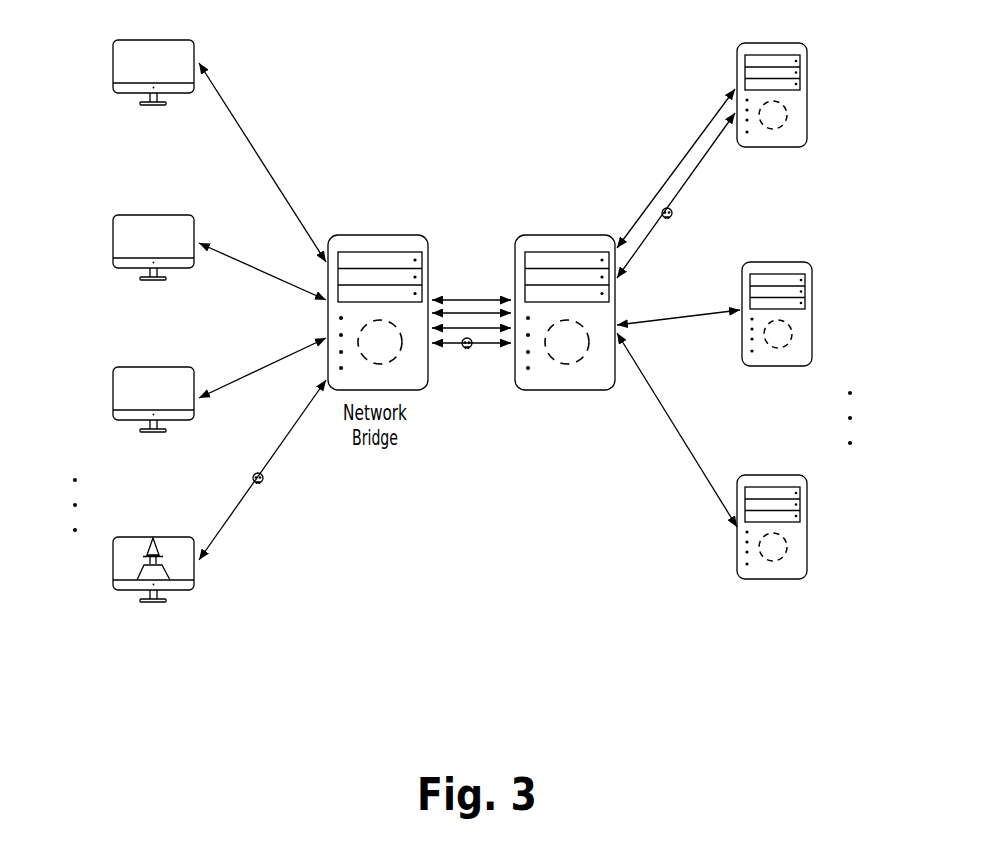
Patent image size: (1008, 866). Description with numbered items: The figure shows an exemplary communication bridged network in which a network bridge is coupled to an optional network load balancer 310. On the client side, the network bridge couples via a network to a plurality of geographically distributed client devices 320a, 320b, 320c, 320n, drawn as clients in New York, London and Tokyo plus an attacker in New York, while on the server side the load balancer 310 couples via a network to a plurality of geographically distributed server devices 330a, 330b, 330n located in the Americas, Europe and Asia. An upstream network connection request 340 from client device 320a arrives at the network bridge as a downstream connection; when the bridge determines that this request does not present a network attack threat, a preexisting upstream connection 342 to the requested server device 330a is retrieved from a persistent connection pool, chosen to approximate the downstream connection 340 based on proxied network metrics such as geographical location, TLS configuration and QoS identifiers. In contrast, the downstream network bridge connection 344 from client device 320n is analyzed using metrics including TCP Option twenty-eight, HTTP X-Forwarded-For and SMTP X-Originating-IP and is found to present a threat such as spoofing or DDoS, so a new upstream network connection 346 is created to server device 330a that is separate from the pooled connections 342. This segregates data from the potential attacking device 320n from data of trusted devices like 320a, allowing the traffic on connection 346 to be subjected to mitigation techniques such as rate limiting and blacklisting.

The network load balancer 310 is at (533, 236).
The client device 320a is at (113, 74).
The client device 320b is at (113, 250).
The client device 320c is at (113, 416).
The client device 320n is at (113, 578).
The server device 330a is at (808, 88).
The server device 330b is at (813, 290).
The server device 330n is at (807, 520).
The upstream network connection request 340 is at (281, 193).
The upstream connection 342 is at (668, 180).
The downstream network bridge connection 344 is at (232, 512).
The new upstream network connection 346 is at (634, 253).